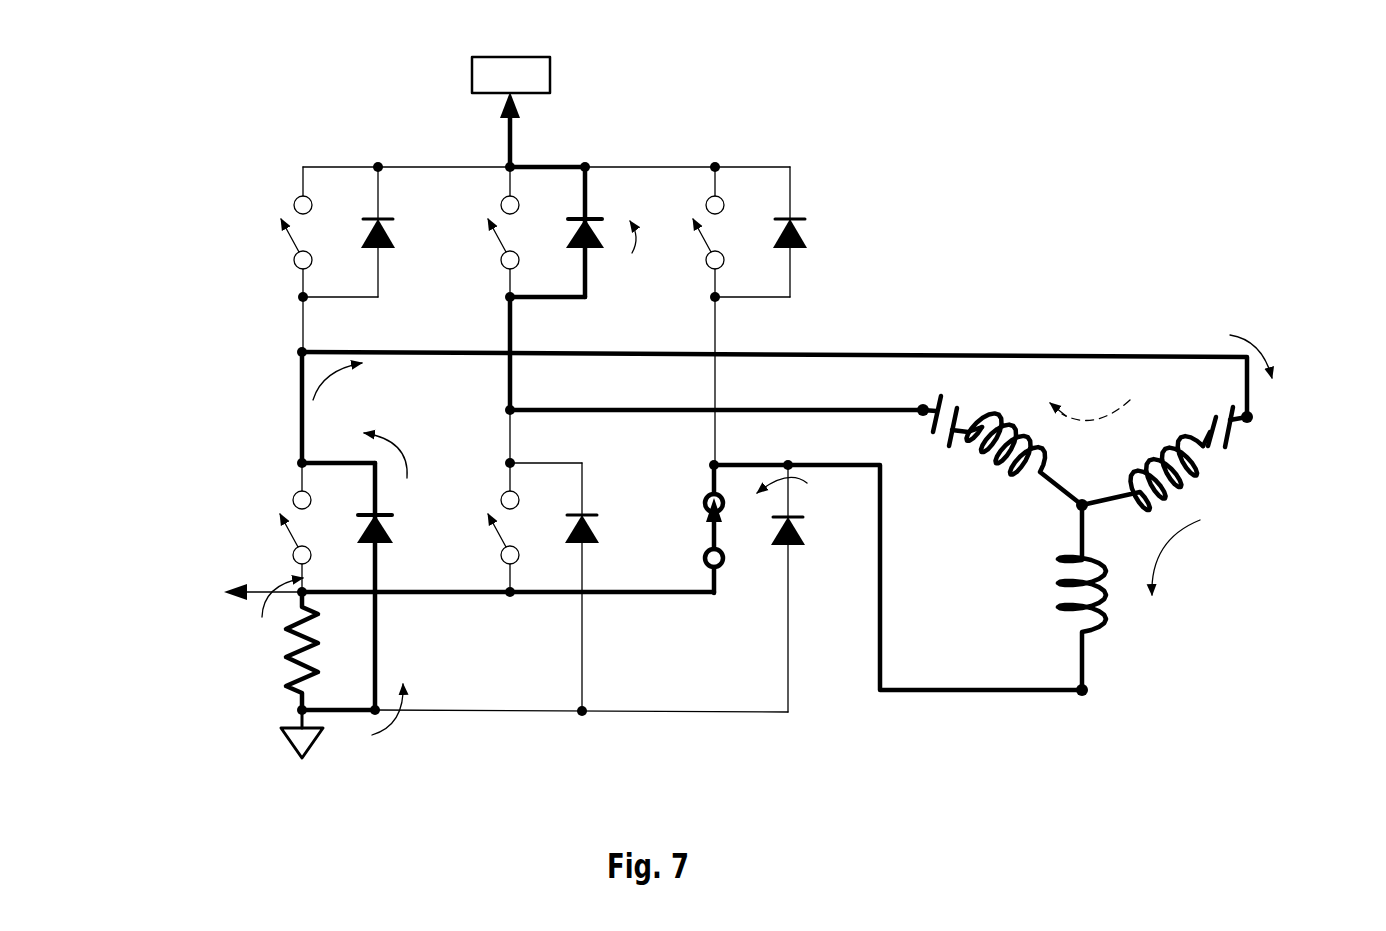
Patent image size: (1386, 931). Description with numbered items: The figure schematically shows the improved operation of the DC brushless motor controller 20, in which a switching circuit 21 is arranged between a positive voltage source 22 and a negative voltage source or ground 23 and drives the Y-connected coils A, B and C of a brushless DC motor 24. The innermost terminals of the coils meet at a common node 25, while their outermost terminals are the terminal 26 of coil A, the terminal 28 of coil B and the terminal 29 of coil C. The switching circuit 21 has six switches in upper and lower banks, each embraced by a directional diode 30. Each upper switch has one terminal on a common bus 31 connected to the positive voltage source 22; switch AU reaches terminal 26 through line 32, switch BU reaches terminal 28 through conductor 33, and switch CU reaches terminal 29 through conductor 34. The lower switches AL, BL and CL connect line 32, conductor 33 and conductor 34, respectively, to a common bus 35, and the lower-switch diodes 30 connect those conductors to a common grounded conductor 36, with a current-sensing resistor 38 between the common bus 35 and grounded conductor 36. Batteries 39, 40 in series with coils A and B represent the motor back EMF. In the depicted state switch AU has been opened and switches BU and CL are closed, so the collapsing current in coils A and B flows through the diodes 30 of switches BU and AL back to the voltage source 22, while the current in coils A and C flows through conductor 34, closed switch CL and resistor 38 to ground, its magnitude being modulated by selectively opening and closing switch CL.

The DC brushless motor controller 20 is at (1056, 135).
The switching circuit 21 is at (275, 121).
The positive voltage source 22 is at (541, 89).
The negative voltage source or ground 23 is at (336, 752).
The brushless DC motor 24 is at (1164, 540).
The common node 25 is at (1044, 522).
The terminal of coil A 26 is at (1281, 432).
The terminal of coil B 28 is at (955, 392).
The terminal of coil C 29 is at (1117, 711).
The directional diode 30 is at (610, 373).
The common bus 31 is at (546, 147).
The line 32 is at (784, 394).
The conductor 33 is at (714, 390).
The conductor 34 is at (898, 577).
The common bus 35 is at (469, 609).
The common grounded conductor 36 is at (542, 722).
The current-sensing resistor 38 is at (265, 651).
The battery 39 is at (1262, 456).
The battery 40 is at (926, 427).